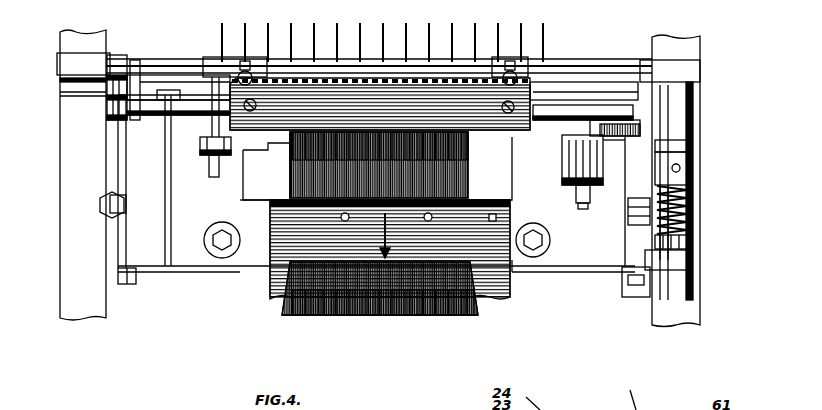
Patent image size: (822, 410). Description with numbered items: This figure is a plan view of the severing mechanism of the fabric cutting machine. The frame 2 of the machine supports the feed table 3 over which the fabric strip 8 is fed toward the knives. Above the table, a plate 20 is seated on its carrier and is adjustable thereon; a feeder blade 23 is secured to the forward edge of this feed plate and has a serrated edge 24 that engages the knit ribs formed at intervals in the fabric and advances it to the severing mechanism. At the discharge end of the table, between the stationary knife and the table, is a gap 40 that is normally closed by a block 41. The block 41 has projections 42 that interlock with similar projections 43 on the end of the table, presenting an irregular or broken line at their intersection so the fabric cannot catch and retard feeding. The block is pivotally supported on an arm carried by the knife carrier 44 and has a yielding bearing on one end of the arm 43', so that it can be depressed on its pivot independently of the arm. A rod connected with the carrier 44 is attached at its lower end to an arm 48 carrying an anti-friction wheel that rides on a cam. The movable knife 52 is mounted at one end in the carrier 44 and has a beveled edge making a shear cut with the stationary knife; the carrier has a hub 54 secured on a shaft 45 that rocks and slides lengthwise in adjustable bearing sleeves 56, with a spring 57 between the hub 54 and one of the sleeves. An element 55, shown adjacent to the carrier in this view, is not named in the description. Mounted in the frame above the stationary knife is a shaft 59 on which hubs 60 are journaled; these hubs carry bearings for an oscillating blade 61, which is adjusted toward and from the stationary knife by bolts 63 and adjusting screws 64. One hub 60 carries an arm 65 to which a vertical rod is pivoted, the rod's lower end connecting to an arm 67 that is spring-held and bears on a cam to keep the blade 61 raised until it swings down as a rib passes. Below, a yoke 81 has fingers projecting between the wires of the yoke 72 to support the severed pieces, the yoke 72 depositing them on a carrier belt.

The frame 2 is at (72, 105).
The feed table 3 is at (507, 203).
The fabric strip 8 is at (300, 305).
The plate 20 is at (253, 264).
The feeder blade 23 is at (250, 262).
The serrated edge 24 is at (244, 258).
The gap 40 is at (268, 132).
The block 41 is at (305, 132).
The projections 42 is at (268, 148).
The projections on the end of the table 43 is at (220, 137).
The arm 43' is at (574, 201).
The knife carrier 44 is at (692, 144).
The shaft 45 is at (686, 202).
The arm 48 is at (578, 202).
The movable knife 52 is at (383, 133).
The hub 54 is at (690, 157).
The cylinder 55 is at (566, 148).
The adjustable bearing sleeves 56 is at (684, 229).
The spring 57 is at (684, 190).
The shaft 59 is at (104, 98).
The hubs 60 is at (175, 100).
The oscillating blade 61 is at (350, 133).
The bolts 63 is at (212, 128).
The adjusting screws 64 is at (203, 122).
The arm 65 is at (200, 160).
The arm 67 is at (206, 175).
The yoke 72 is at (221, 36).
The yoke 81 is at (206, 192).